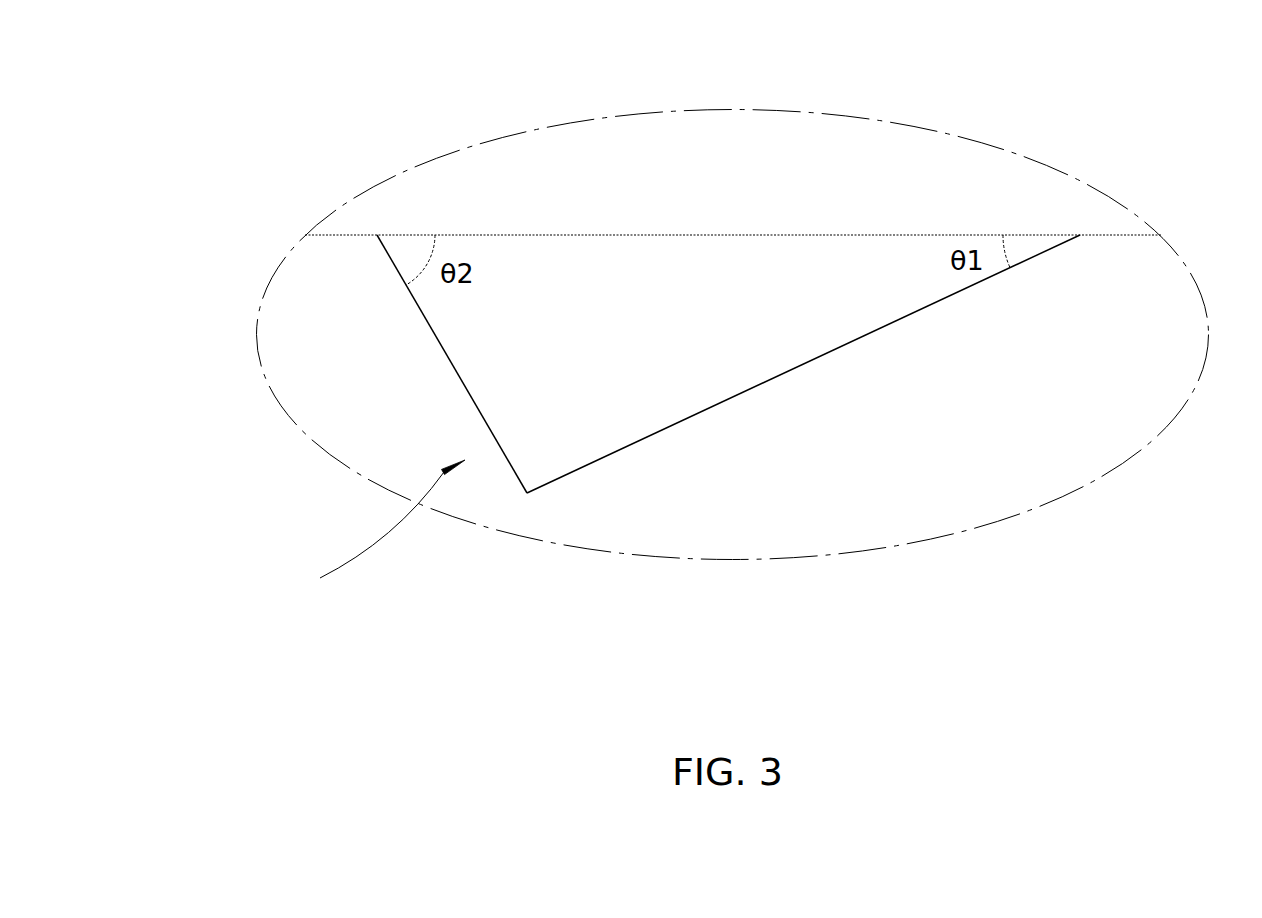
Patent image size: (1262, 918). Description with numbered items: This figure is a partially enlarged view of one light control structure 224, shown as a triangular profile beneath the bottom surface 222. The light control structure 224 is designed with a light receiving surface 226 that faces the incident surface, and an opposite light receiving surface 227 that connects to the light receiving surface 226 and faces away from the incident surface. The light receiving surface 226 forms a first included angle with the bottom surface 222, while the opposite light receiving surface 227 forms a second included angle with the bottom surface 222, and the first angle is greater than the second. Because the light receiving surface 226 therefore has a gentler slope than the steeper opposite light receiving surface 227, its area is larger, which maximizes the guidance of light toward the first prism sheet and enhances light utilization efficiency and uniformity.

The bottom surface 222 is at (640, 235).
The light control structure 224 is at (364, 528).
The light receiving surface 226 is at (803, 363).
The opposite light receiving surface 227 is at (450, 366).